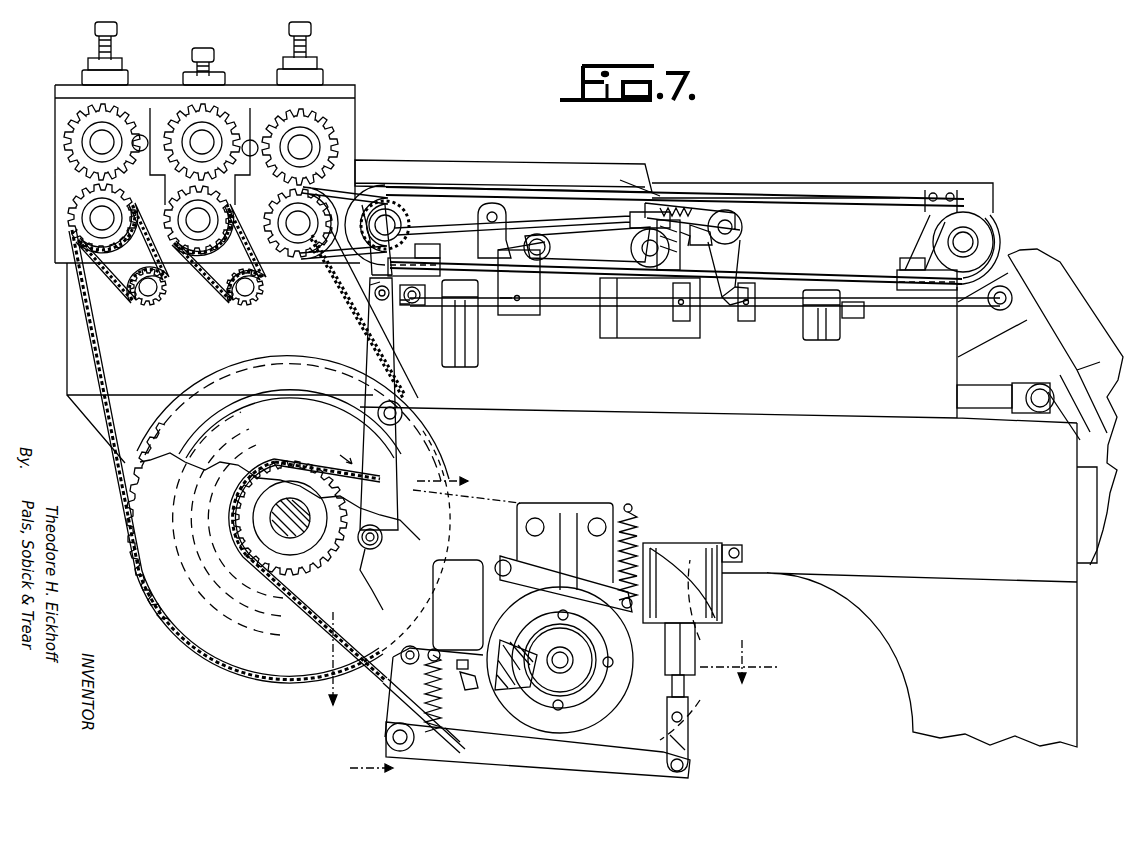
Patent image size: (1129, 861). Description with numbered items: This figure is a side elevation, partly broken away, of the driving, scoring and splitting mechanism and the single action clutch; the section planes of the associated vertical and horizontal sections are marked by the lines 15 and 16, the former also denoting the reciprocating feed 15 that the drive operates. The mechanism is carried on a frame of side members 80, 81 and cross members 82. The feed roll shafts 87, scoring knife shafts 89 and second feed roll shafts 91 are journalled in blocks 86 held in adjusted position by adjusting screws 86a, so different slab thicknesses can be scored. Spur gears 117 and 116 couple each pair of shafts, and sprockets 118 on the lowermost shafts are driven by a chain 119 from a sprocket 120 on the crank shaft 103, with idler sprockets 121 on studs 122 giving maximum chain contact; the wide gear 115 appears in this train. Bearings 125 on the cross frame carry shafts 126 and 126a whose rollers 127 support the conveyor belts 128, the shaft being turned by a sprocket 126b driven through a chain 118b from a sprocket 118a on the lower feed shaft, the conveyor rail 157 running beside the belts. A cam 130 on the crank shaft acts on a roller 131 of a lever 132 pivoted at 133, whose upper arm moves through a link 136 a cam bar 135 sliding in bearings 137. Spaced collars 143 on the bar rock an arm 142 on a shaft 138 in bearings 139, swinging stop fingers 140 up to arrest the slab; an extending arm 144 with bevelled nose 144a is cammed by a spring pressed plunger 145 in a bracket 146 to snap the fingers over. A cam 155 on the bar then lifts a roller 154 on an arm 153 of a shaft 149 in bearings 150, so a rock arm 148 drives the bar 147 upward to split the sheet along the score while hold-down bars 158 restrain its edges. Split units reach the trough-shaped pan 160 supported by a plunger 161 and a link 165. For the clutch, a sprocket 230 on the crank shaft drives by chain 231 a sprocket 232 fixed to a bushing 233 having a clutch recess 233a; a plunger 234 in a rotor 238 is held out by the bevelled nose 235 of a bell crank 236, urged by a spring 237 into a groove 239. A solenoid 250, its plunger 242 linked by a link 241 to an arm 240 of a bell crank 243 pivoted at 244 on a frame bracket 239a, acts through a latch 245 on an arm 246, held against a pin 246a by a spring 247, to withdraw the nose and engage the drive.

The reciprocating feed 15 is at (435, 629).
The section line 16 is at (551, 669).
The side frame member 80 is at (909, 585).
The side frame member 81 is at (340, 118).
The cross frame member 82 is at (572, 363).
The journal block 86 is at (240, 258).
The adjusting screw 86a is at (293, 33).
The feed roll shaft 87 is at (95, 220).
The scoring knife shaft 89 is at (258, 194).
The feed roll shaft 91 is at (298, 228).
The crank shaft 103 is at (282, 535).
The driven gear 115 is at (72, 200).
The spur gear 116 is at (292, 265).
The spur gear 117 is at (197, 258).
The sprocket 118 is at (293, 243).
The sprocket 118a is at (336, 272).
The chain 118b is at (379, 283).
The chain 119 is at (102, 360).
The sprocket 120 is at (235, 672).
The idler sprocket 121 is at (260, 300).
The stud 122 is at (246, 292).
The bearing 125 is at (975, 242).
The shaft 126 is at (402, 226).
The shaft 126a is at (948, 240).
The sprocket 126b is at (383, 210).
The roller 127 is at (985, 225).
The conveyor belt 128 is at (668, 190).
The cam 130 is at (323, 445).
The roller 131 is at (368, 552).
The lever 132 is at (385, 440).
The lever pivot 133 is at (397, 410).
The cam bar 135 is at (565, 310).
The link 136 is at (408, 306).
The bearing 137 is at (802, 330).
The shaft 138 is at (742, 226).
The bearing 139 is at (749, 290).
The stop finger 140 is at (705, 210).
The arm 142 is at (737, 262).
The collar 143 is at (748, 323).
The extending arm 144 is at (690, 230).
The bevelled nose 144a is at (699, 244).
The spring pressed plunger 145 is at (683, 223).
The bracket 146 is at (640, 205).
The bar 147 is at (560, 205).
The rock arm 148 is at (510, 240).
The shaft 149 is at (652, 268).
The bearing 150 is at (680, 262).
The arm 153 is at (587, 244).
The roller 154 is at (550, 245).
The cam 155 is at (521, 278).
The conveyor rail 157 is at (526, 176).
The hold-down bar 158 is at (815, 190).
The trough-shaped pan 160 is at (1052, 318).
The plunger 161 is at (1005, 398).
The link 165 is at (962, 340).
The sprocket 230 is at (243, 550).
The driving chain 231 is at (313, 612).
The sprocket 232 is at (698, 716).
The bushing 233 is at (610, 692).
The clutch recess 233a is at (666, 649).
The spring pressed plunger 234 is at (542, 660).
The bevelled nose 235 is at (493, 698).
The bell crank 236 is at (487, 613).
The spring 237 is at (640, 527).
The rotor 238 is at (628, 680).
The groove 239 is at (550, 590).
The frame bracket 239a is at (513, 730).
The arm 240 is at (605, 760).
The link 241 is at (690, 752).
The solenoid plunger 242 is at (688, 683).
The bell crank 243 is at (475, 752).
The pivot 244 is at (385, 737).
The latch 245 is at (452, 652).
The arm 246 is at (397, 703).
The pin 246a is at (493, 685).
The spring 247 is at (437, 717).
The solenoid 250 is at (725, 610).